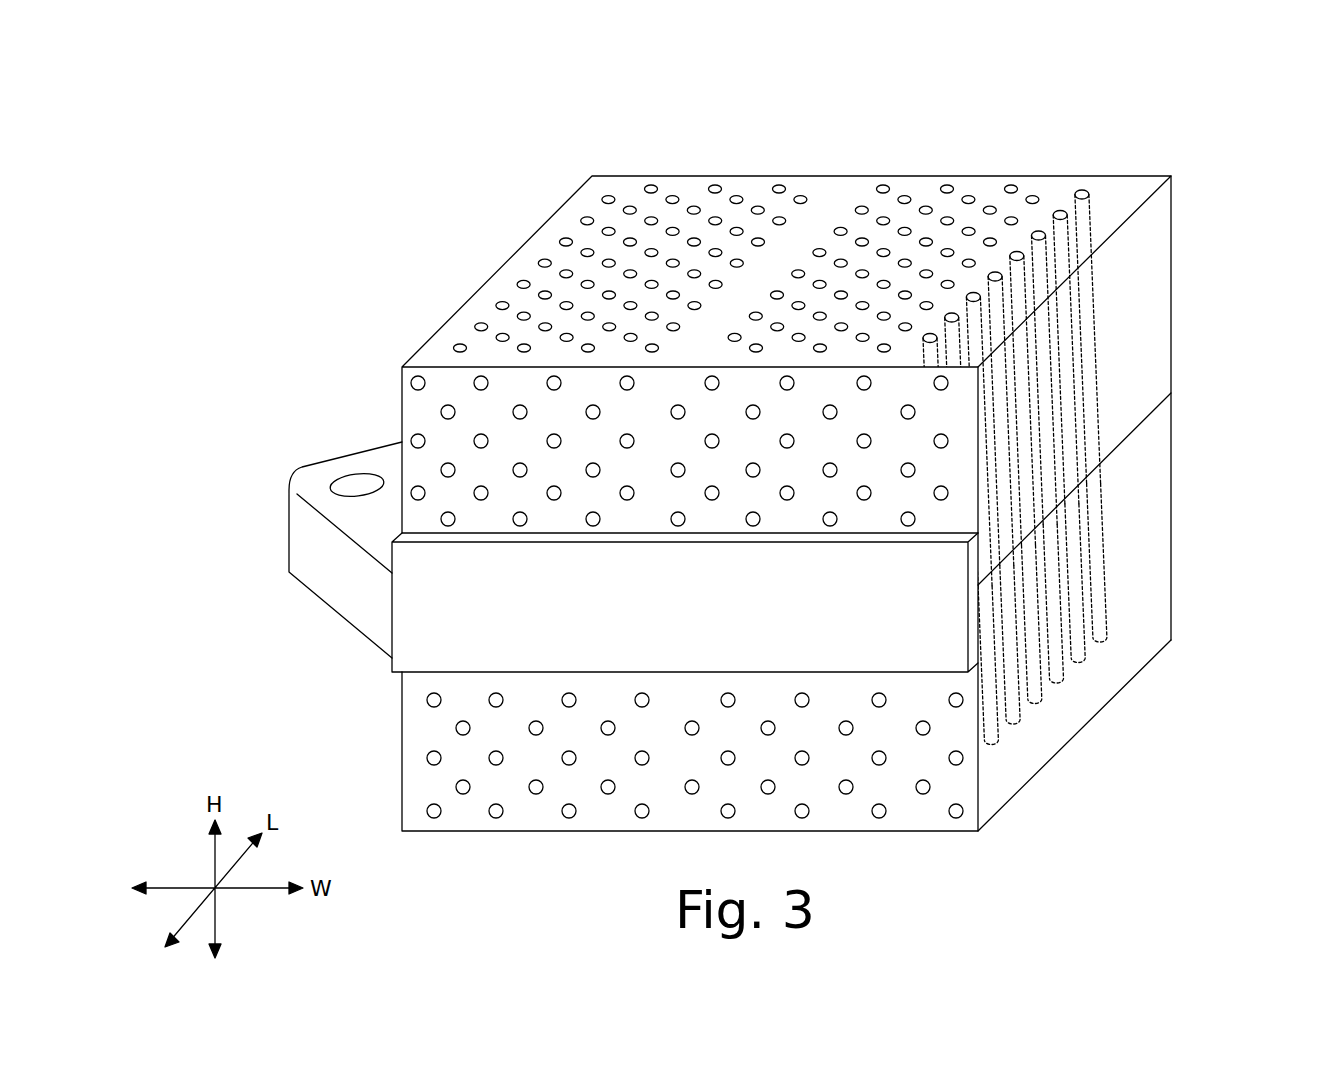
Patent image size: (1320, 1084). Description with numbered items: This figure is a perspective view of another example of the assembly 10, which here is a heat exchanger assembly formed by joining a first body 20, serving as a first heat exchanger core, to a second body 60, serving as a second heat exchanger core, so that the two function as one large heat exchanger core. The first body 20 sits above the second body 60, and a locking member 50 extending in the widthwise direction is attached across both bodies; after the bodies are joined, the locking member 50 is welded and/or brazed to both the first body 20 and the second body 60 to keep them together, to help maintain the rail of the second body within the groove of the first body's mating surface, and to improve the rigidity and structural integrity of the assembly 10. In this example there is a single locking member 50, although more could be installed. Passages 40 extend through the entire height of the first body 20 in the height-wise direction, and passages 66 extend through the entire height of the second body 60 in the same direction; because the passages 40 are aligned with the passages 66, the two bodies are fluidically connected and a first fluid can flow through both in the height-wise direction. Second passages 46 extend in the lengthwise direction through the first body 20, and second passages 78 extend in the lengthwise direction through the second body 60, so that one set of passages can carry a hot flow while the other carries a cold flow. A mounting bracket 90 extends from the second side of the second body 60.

The assembly 10 is at (1197, 140).
The first body 20 is at (1160, 252).
The passages 40 is at (1050, 390).
The second plurality of passages 46 is at (441, 408).
The locking member 50 is at (706, 621).
The second body 60 is at (1160, 520).
The passages 66 is at (1077, 625).
The second plurality of passages 78 is at (428, 754).
The mounting bracket 90 is at (315, 482).